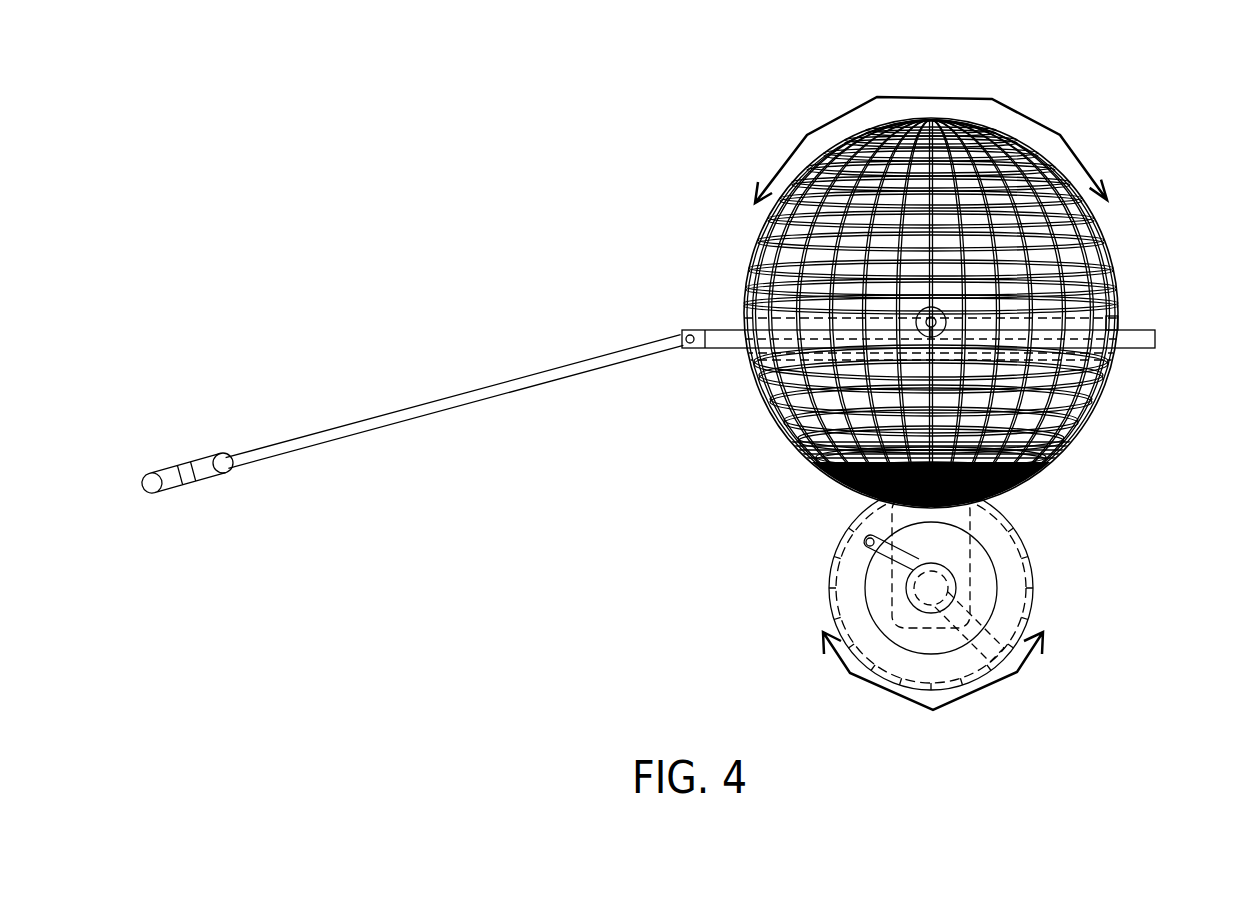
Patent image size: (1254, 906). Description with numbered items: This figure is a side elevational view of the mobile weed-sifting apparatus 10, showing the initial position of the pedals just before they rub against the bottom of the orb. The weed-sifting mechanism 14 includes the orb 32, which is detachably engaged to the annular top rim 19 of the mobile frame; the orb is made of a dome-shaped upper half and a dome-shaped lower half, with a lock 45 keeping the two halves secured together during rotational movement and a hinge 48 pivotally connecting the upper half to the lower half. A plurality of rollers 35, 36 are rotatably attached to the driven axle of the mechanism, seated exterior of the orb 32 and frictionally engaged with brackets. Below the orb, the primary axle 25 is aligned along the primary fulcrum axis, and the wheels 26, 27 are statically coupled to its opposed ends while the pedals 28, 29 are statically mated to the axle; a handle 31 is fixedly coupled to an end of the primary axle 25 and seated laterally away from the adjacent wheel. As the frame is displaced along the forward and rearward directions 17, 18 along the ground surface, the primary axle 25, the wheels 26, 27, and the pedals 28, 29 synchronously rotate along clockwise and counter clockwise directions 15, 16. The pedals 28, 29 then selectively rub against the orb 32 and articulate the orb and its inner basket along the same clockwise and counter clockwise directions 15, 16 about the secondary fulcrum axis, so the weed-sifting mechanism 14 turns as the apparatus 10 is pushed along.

The mobile weed-sifting apparatus 10 is at (652, 171).
The weed-sifting mechanism 14 is at (1084, 483).
The clockwise direction 15 is at (931, 113).
The counter clockwise direction 16 is at (942, 97).
The forward direction 17 is at (933, 690).
The rearward direction 18 is at (890, 693).
The annular top rim 19 is at (1143, 343).
The primary axle 25 is at (935, 588).
The wheel 26 is at (870, 588).
The wheel 27 is at (832, 593).
The pedal 28 is at (857, 525).
The pedal 29 is at (1010, 650).
The handle 31 is at (867, 540).
The orb 32 is at (937, 510).
The roller 35 is at (794, 278).
The roller 36 is at (920, 312).
The lock 45 is at (745, 322).
The hinge 48 is at (1113, 320).